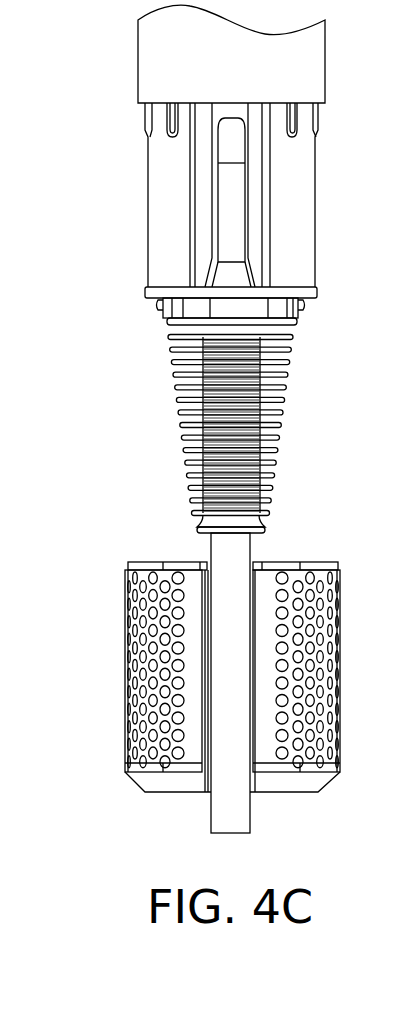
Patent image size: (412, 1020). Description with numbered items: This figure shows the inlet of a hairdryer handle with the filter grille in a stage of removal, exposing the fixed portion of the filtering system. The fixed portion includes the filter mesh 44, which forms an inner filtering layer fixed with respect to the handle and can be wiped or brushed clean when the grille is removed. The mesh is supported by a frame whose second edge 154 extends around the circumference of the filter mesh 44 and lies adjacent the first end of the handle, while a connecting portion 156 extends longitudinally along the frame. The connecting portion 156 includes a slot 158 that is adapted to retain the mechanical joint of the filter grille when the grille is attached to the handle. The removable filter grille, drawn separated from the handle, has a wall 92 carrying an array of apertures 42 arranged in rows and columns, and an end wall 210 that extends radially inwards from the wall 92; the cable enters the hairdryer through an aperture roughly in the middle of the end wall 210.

The filter mesh 44 is at (160, 177).
The slot 158 is at (232, 193).
The connecting portion 156 is at (255, 238).
The second edge 154 is at (146, 295).
The apertures 42 is at (178, 578).
The wall 92 is at (318, 575).
The end wall 210 is at (317, 782).